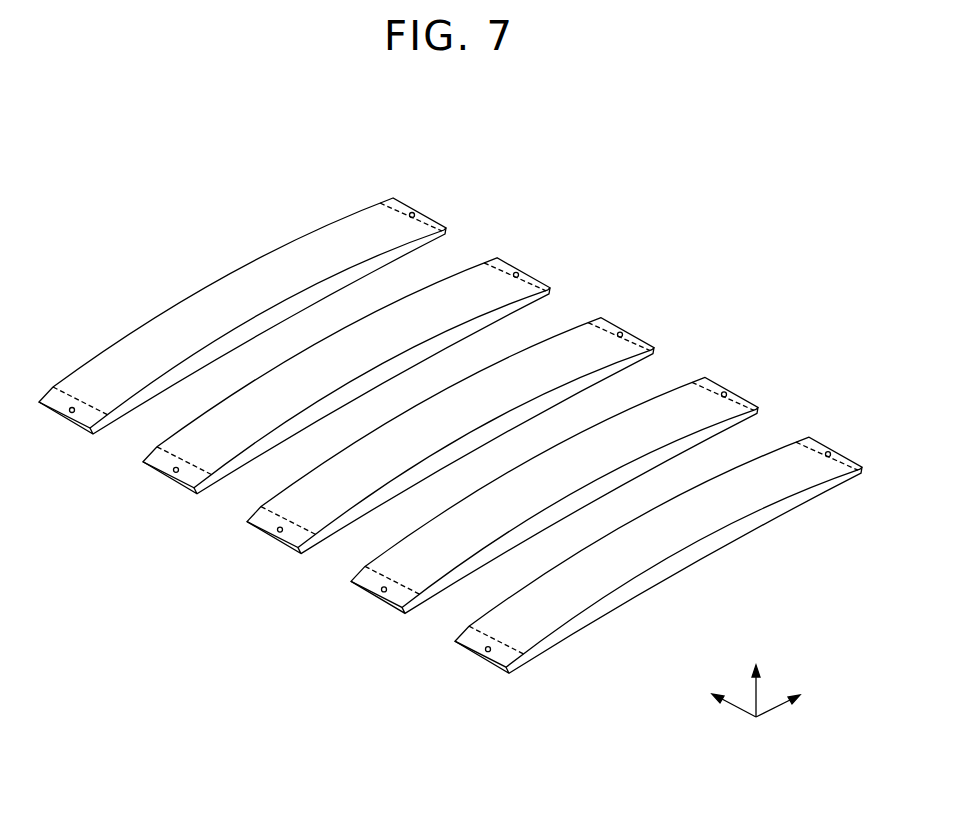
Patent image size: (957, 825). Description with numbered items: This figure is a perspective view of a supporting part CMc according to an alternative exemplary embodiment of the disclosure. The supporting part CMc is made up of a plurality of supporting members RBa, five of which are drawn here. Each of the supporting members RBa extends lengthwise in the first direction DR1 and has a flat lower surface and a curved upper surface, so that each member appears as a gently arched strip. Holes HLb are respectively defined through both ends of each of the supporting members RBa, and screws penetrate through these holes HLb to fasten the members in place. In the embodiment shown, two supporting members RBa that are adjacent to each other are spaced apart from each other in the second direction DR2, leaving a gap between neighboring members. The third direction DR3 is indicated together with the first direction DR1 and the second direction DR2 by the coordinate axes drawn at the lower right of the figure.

The supporting member RBa is at (280, 150).
The hole HLb is at (413, 212).
The supporting part CMc is at (641, 228).
The first direction DR1 is at (797, 698).
The second direction DR2 is at (714, 698).
The third direction DR3 is at (756, 676).